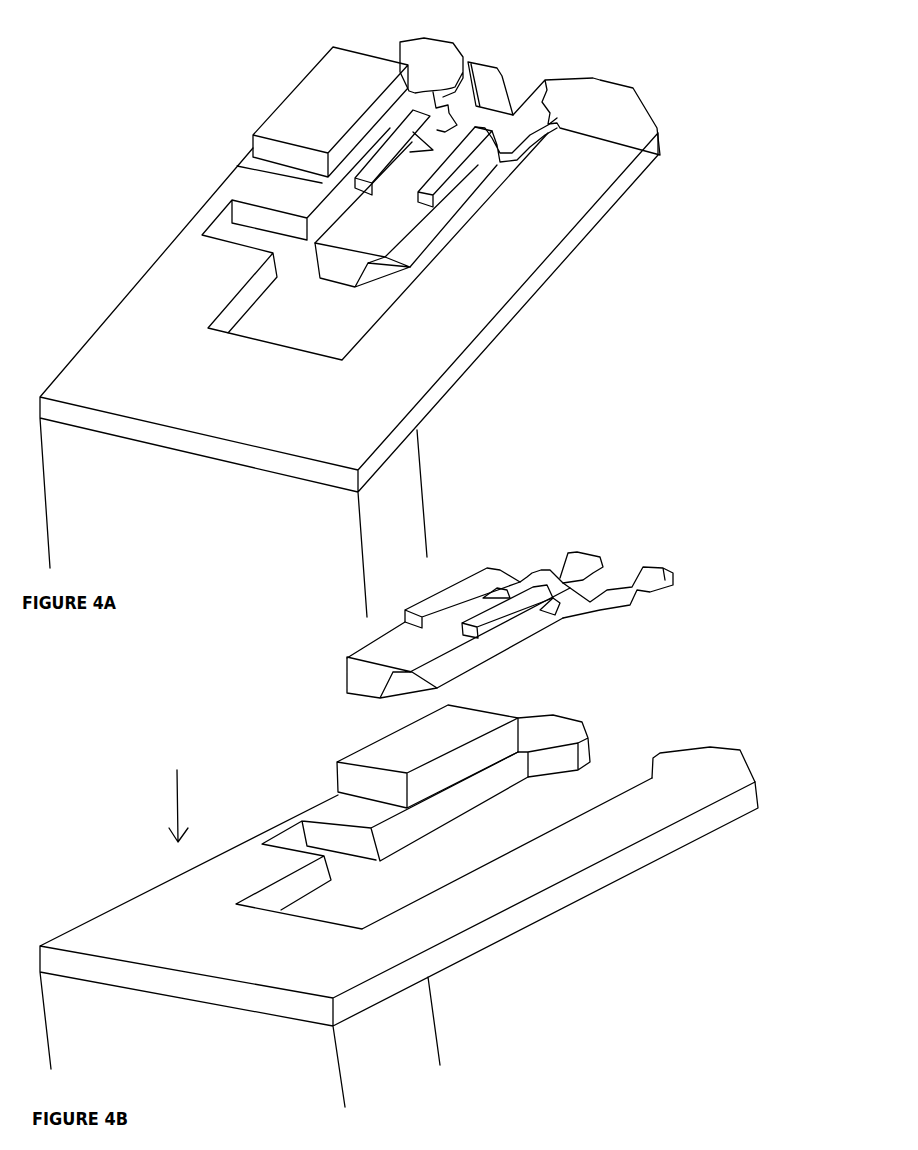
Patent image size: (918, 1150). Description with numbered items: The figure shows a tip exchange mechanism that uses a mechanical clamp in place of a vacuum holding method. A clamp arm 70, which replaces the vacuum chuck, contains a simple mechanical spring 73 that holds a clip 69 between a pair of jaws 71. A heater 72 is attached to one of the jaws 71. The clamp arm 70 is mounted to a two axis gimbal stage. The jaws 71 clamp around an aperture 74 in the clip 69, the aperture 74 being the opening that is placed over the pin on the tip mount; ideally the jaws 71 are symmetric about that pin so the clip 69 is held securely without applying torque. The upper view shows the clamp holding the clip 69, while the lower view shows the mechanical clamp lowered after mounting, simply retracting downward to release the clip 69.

In FIG. 4A, the clip 69 is at (570, 155).
In FIG. 4B, the clip 69 is at (584, 625).
In FIG. 4A, the clamp arm 70 is at (397, 510).
In FIG. 4B, the clamp arm 70 is at (399, 911).
In FIG. 4A, the jaws 71 is at (432, 50).
In FIG. 4B, the jaws 71 is at (607, 602).
In FIG. 4A, the heater 72 is at (295, 107).
In FIG. 4B, the heater 72 is at (427, 756).
In FIG. 4A, the mechanical spring 73 is at (213, 212).
In FIG. 4B, the mechanical spring 73 is at (444, 840).
In FIG. 4A, the aperture 74 is at (512, 95).